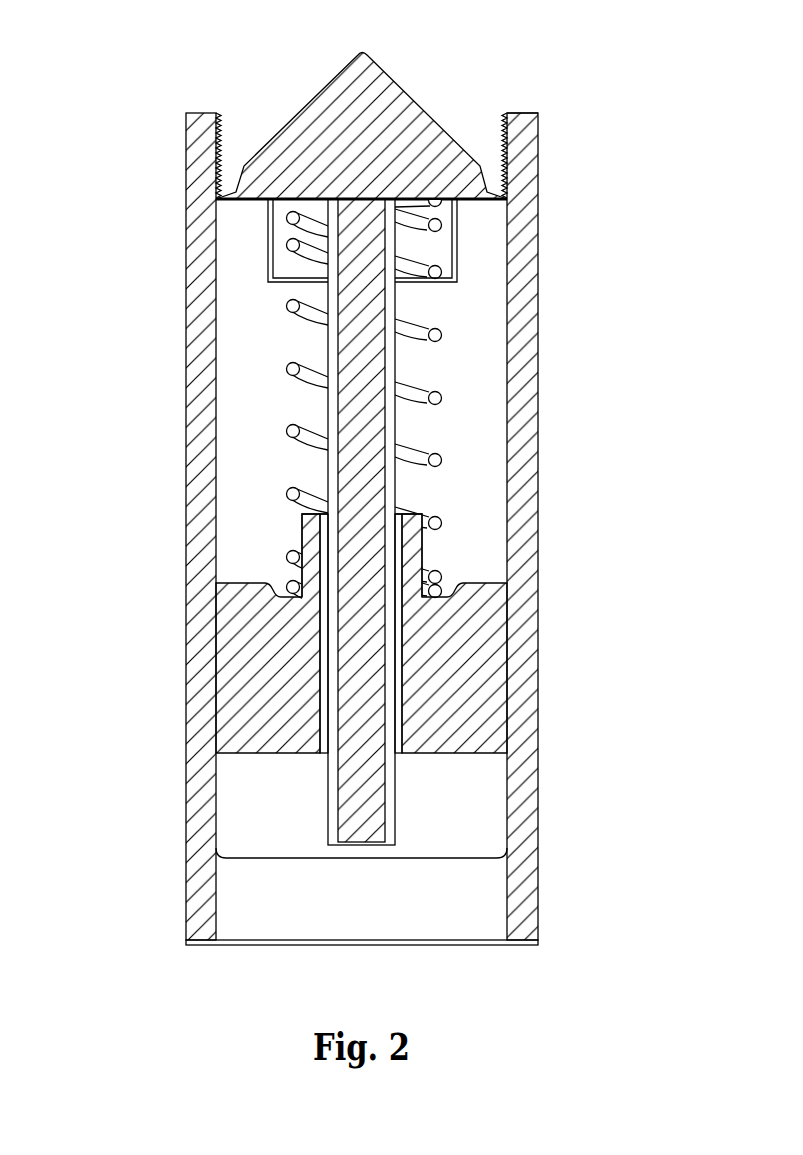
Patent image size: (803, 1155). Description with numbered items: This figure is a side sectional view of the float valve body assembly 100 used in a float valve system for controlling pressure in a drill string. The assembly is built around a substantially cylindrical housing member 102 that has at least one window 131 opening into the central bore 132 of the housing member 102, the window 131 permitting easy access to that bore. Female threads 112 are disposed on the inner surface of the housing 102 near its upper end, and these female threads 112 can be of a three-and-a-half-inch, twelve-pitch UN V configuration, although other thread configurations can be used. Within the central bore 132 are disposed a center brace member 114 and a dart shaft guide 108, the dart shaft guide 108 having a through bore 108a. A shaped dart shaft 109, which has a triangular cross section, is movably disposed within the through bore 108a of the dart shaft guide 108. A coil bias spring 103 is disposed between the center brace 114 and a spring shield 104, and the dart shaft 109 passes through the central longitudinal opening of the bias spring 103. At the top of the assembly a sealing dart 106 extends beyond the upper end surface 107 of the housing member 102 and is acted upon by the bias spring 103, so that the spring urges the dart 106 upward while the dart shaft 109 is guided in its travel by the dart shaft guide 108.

The float valve body assembly 100 is at (385, 559).
The housing member 102 is at (197, 590).
The bias spring 103 is at (441, 337).
The spring shield 104 is at (460, 238).
The sealing dart 106 is at (383, 103).
The upper end surface 107 is at (523, 112).
The dart shaft guide 108 is at (307, 536).
The through bore 108a is at (330, 700).
The dart shaft 109 is at (350, 405).
The female threads 112 is at (222, 148).
The center brace member 114 is at (470, 662).
The window 131 is at (252, 857).
The central bore 132 is at (438, 843).